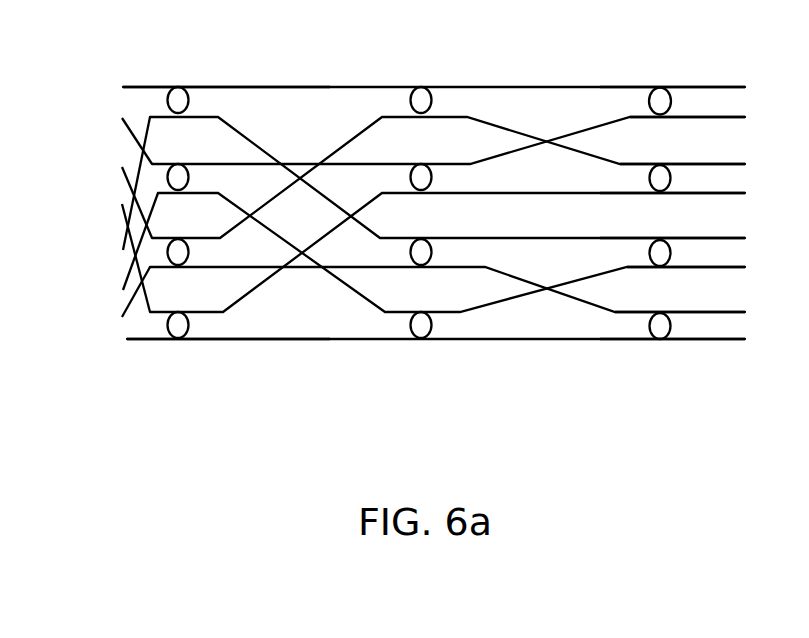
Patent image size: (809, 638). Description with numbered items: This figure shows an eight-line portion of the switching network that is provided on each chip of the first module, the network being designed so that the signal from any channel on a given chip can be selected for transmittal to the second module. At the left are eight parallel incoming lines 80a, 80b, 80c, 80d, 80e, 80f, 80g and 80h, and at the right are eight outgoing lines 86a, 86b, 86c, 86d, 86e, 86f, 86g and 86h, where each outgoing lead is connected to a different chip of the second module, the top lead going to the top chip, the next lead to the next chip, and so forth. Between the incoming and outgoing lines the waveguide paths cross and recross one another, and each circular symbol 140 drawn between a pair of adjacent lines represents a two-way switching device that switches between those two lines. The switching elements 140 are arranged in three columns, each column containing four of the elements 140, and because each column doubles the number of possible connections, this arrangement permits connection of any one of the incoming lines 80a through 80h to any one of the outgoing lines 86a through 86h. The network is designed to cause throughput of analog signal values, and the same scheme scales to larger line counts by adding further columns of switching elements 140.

The switching element 140 is at (180, 100).
The incoming line 80a is at (200, 88).
The incoming line 80b is at (111, 135).
The incoming line 80c is at (111, 197).
The incoming line 80d is at (110, 253).
The incoming line 80e is at (110, 189).
The incoming line 80f is at (114, 247).
The incoming line 80g is at (110, 297).
The incoming line 80h is at (200, 340).
The outgoing line 86a is at (701, 89).
The outgoing line 86b is at (716, 119).
The outgoing line 86c is at (711, 166).
The outgoing line 86d is at (701, 194).
The outgoing line 86e is at (701, 241).
The outgoing line 86f is at (715, 269).
The outgoing line 86g is at (709, 314).
The outgoing line 86h is at (701, 341).